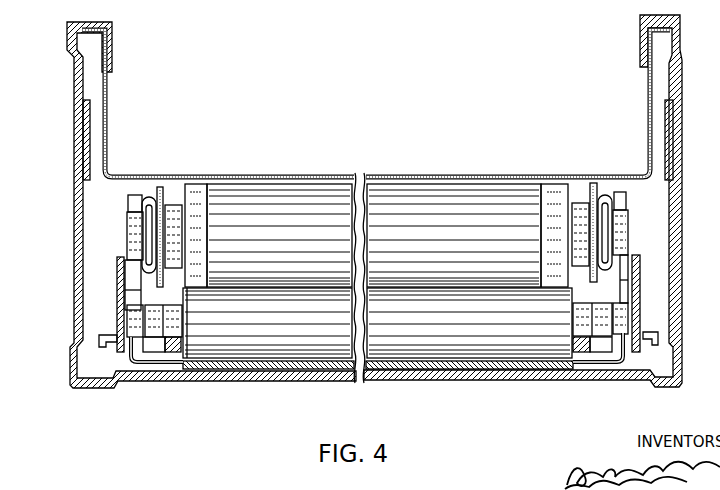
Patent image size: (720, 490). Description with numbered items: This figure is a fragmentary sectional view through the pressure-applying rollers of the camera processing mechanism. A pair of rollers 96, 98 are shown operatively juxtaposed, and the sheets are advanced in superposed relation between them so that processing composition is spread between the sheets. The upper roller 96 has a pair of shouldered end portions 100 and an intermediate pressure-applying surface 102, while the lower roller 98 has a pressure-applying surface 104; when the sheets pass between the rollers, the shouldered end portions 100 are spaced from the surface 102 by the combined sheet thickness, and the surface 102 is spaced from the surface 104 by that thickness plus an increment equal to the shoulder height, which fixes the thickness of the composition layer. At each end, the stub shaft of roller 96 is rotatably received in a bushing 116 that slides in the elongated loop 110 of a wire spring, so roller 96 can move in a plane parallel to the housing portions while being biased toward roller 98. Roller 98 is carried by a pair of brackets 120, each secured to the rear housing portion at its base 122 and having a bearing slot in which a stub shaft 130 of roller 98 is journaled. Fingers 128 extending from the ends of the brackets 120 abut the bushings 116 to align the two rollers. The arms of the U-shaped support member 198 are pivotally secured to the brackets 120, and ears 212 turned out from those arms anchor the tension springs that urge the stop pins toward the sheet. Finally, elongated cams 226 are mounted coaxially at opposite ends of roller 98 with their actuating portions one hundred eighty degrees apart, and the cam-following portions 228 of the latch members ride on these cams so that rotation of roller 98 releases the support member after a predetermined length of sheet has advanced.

The roller 96 is at (380, 206).
The roller 98 is at (428, 328).
The shouldered end portions 100 is at (200, 186).
The intermediate pressure-applying surface 102 is at (455, 190).
The pressure-applying surface 104 is at (433, 342).
The elongated loop 110 is at (148, 196).
The bushings 116 is at (128, 232).
The brackets 120 is at (628, 268).
The base 122 is at (153, 364).
The fingers 128 is at (134, 194).
The stub shafts 130 is at (132, 323).
The U-shaped support member 198 is at (115, 283).
The ears 212 is at (80, 342).
The elongated cams 226 is at (176, 320).
The cam-following portions 228 is at (172, 354).